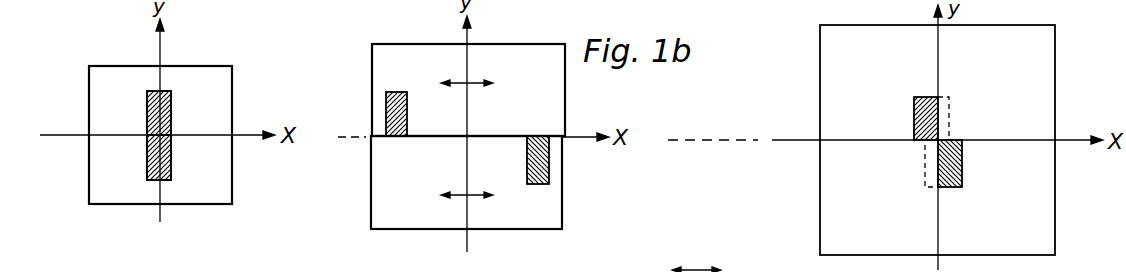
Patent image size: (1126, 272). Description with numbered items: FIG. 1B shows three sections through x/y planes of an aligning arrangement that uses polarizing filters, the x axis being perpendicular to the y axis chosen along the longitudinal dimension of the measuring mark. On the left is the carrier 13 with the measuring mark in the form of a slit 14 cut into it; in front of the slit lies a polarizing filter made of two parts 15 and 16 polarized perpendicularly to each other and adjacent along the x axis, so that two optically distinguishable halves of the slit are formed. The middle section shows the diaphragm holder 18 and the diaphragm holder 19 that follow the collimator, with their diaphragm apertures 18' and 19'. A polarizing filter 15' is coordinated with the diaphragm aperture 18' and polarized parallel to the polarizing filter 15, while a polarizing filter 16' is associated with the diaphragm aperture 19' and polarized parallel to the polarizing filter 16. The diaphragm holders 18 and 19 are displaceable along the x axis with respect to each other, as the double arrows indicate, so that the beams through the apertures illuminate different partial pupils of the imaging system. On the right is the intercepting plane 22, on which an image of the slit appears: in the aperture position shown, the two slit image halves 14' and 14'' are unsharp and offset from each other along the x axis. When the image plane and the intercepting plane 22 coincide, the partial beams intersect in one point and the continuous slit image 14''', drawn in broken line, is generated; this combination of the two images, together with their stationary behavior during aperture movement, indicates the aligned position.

The carrier 13 is at (214, 88).
The slit 14 is at (180, 107).
The polarizing filter part 15 is at (137, 85).
The polarizing filter part 16 is at (137, 190).
The diaphragm holder 18 is at (490, 90).
The diaphragm aperture 18' is at (411, 74).
The polarizing filter 15' is at (367, 114).
The diaphragm holder 19 is at (489, 183).
The diaphragm aperture 19' is at (524, 201).
The polarizing filter 16' is at (570, 160).
The intercepting plane 22 is at (1037, 63).
The slit image half 14' is at (897, 118).
The slit image half 14'' is at (973, 163).
The continuous slit image 14''' is at (977, 118).